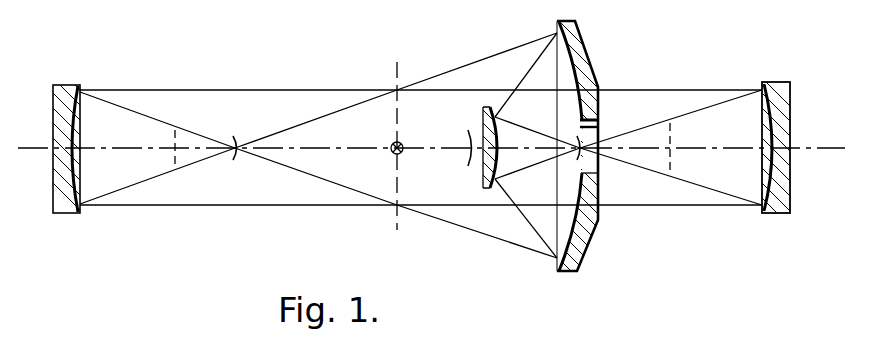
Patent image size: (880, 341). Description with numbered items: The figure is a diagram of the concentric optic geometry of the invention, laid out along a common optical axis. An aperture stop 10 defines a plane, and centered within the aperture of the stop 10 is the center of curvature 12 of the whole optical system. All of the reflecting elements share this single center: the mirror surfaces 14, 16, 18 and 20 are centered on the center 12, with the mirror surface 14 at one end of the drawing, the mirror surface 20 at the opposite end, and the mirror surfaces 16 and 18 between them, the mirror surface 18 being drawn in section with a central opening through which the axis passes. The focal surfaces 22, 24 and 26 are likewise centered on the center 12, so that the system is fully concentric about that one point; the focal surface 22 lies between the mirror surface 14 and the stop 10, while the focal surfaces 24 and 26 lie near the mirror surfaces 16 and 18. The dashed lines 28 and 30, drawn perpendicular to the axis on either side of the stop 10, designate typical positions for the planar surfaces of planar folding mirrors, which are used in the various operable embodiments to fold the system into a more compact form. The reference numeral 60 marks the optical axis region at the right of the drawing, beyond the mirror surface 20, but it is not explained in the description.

The aperture stop 10 is at (397, 70).
The center of curvature 12 is at (390, 152).
The mirror surface 14 is at (72, 174).
The mirror surface 16 is at (494, 190).
The mirror surface 18 is at (571, 78).
The mirror surface 20 is at (770, 172).
The focal surface 22 is at (235, 160).
The focal surface 24 is at (468, 166).
The focal surface 26 is at (583, 137).
The dashed line 28 is at (175, 166).
The dashed line 30 is at (672, 165).
The optical axis 60 is at (812, 147).